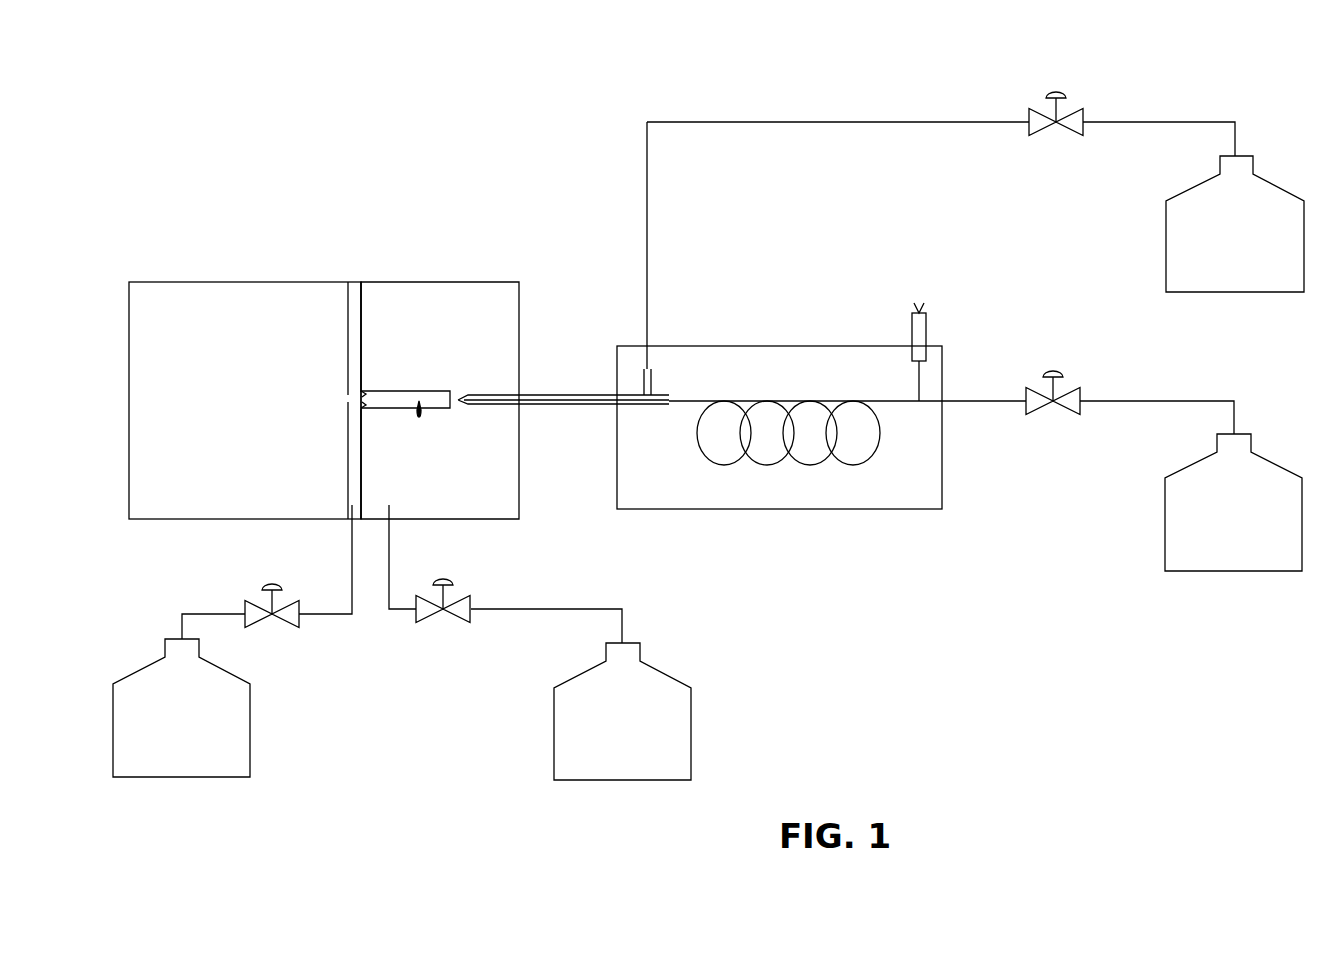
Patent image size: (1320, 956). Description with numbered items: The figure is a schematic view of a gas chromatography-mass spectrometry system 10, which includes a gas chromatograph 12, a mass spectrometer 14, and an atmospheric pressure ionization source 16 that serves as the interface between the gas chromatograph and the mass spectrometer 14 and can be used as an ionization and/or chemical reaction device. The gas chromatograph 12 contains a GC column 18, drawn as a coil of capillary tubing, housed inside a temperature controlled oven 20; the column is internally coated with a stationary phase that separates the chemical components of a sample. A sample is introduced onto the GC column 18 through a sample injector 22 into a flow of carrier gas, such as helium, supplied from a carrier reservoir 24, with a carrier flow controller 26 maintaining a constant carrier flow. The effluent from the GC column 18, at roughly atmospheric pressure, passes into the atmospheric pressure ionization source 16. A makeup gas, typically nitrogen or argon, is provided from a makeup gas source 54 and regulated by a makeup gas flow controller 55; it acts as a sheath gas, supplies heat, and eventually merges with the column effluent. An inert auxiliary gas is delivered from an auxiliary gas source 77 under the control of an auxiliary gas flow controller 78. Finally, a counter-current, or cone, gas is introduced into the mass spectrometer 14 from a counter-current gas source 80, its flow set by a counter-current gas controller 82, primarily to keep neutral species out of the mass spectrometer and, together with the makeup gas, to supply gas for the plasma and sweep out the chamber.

The gas chromatography-mass spectrometry system 10 is at (392, 82).
The gas chromatograph 12 is at (720, 312).
The mass spectrometer 14 is at (129, 270).
The atmospheric pressure ionization source 16 is at (363, 270).
The GC column 18 is at (853, 465).
The temperature controlled oven 20 is at (780, 509).
The sample injector 22 is at (912, 340).
The carrier reservoir 24 is at (1234, 571).
The carrier flow controller 26 is at (1130, 409).
The makeup gas source 54 is at (1237, 292).
The makeup gas flow controller 55 is at (941, 130).
The auxiliary gas source 77 is at (622, 780).
The auxiliary gas flow controller 78 is at (519, 618).
The counter-current gas source 80 is at (181, 777).
The counter-current gas controller 82 is at (241, 622).